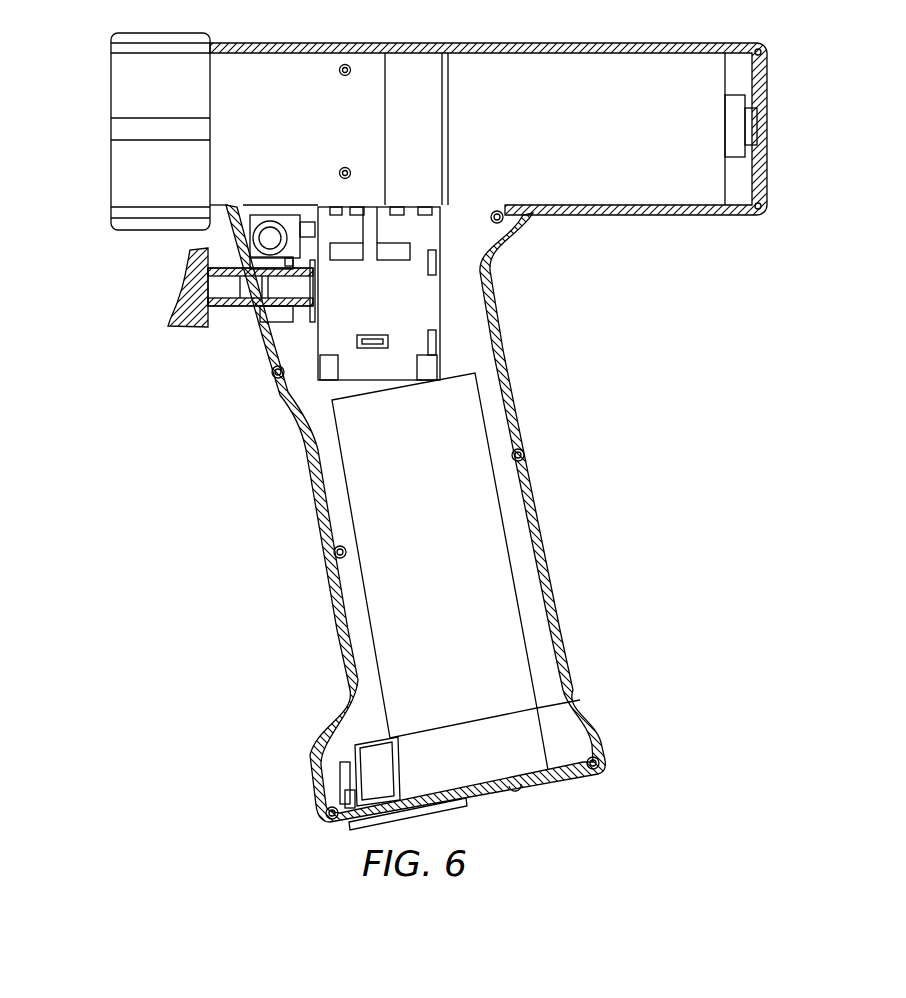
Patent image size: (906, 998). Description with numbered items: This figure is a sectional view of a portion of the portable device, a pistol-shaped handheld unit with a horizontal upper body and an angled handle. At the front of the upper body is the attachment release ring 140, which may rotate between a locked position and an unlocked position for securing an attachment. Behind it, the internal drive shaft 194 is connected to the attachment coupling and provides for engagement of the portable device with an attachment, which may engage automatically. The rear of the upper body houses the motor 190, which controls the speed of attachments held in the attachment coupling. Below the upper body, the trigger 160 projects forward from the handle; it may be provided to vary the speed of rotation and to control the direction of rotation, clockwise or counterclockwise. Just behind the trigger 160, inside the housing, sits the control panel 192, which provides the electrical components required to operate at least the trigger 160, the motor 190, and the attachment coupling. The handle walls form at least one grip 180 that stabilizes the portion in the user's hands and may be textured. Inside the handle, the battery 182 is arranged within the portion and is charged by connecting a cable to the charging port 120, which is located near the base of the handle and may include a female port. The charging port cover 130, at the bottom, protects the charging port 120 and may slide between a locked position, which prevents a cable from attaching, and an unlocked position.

The charging port 120 is at (377, 755).
The charging port cover 130 is at (463, 810).
The attachment release ring 140 is at (146, 95).
The trigger 160 is at (190, 300).
The grip 180 is at (552, 572).
The battery 182 is at (383, 503).
The motor 190 is at (568, 178).
The control panel 192 is at (403, 338).
The internal drive shaft 194 is at (270, 92).